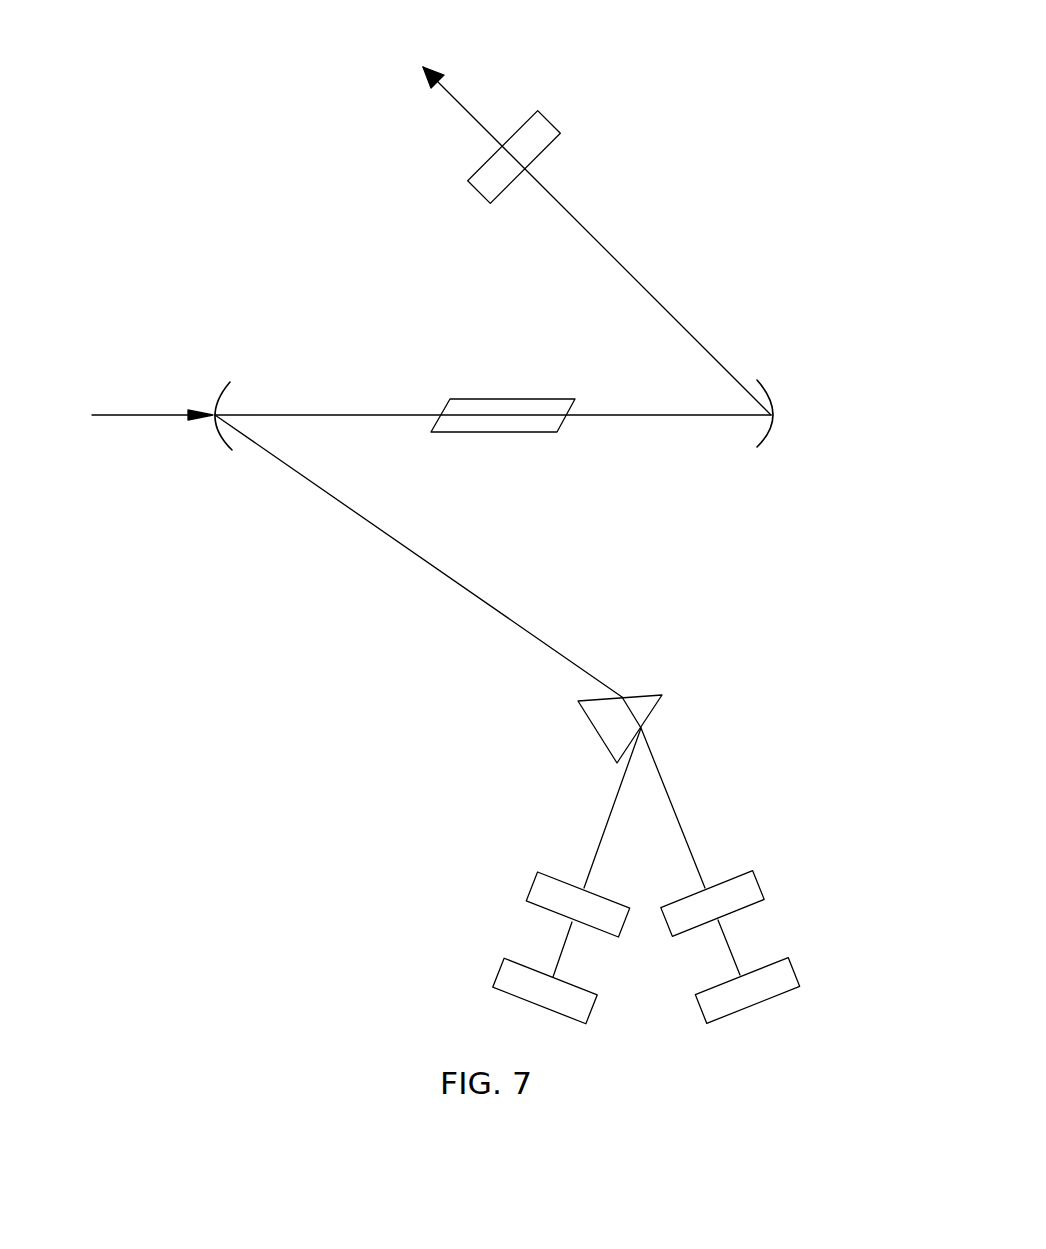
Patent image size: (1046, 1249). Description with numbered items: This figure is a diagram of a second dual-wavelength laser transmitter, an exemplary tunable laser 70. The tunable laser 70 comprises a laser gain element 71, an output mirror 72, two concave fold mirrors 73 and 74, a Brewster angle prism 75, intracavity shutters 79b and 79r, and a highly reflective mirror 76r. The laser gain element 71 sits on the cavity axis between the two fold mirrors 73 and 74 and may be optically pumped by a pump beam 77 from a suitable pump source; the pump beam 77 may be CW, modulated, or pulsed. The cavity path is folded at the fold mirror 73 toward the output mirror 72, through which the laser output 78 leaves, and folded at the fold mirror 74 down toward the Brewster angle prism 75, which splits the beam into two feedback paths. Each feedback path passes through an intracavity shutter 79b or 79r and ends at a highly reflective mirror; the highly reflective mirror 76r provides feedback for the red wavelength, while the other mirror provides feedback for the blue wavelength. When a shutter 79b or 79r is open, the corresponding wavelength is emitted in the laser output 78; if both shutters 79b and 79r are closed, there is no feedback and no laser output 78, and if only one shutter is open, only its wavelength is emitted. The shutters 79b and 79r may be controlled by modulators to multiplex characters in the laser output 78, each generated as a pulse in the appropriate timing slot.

The tunable laser 70 is at (728, 571).
The laser gain element 71 is at (507, 398).
The output mirror 72 is at (549, 121).
The concave fold mirror 73 is at (772, 393).
The concave fold mirror 74 is at (218, 395).
The Brewster angle prism 75 is at (595, 733).
The highly reflective mirror 76r is at (795, 972).
The pump beam 77 is at (136, 443).
The laser output 78 is at (435, 78).
The intracavity shutter 79b is at (532, 885).
The intracavity shutter 79r is at (762, 883).